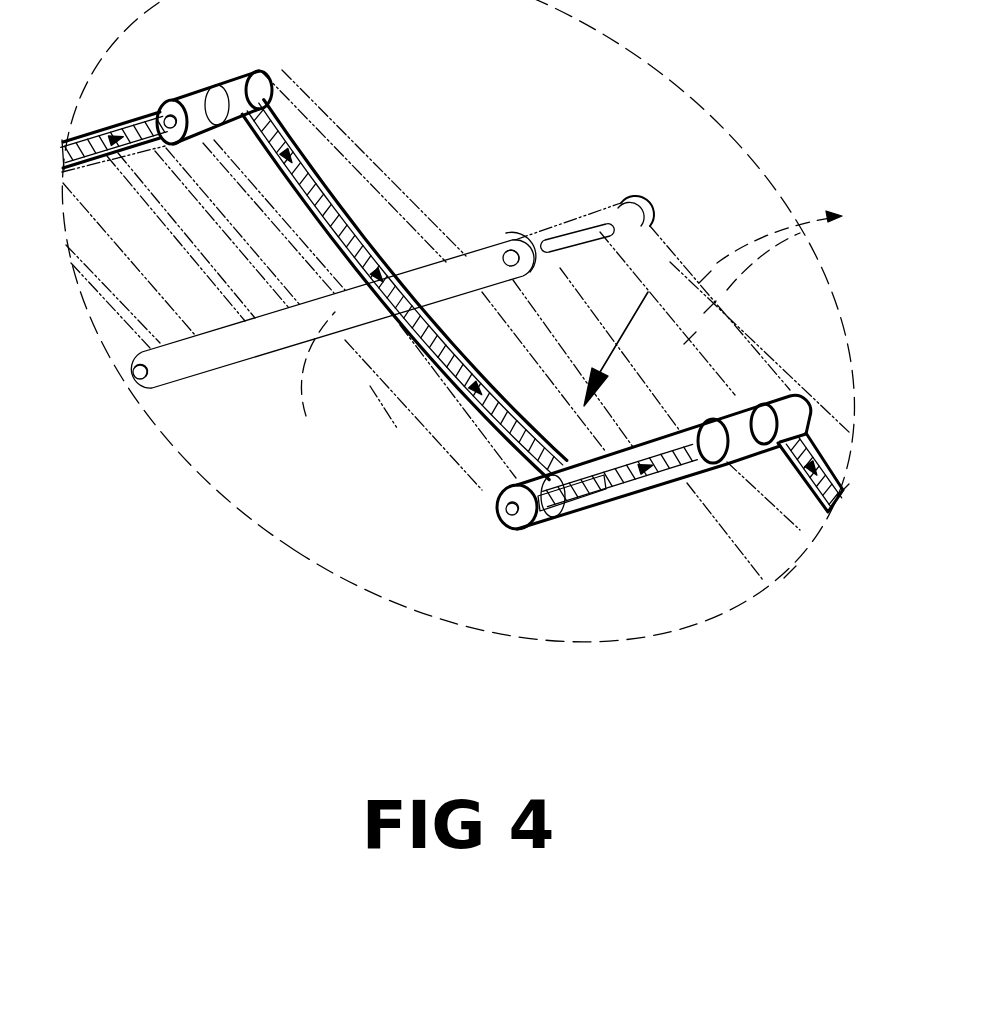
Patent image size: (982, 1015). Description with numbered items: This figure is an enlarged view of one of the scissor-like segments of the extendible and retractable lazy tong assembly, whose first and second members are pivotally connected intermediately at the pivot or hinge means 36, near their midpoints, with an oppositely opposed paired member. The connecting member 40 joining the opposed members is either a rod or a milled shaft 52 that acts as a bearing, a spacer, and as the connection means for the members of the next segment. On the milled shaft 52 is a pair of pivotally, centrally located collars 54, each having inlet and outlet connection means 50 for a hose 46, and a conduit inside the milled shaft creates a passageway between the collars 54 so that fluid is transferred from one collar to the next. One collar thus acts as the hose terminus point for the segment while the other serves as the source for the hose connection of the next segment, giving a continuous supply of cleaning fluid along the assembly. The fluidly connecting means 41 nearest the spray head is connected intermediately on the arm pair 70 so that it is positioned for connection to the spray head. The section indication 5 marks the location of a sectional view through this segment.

The section view direction 5 is at (624, 332).
The pivot or hinge means 36 is at (333, 338).
The connecting member 40 is at (487, 345).
The fluidly connecting means 41 is at (775, 422).
The internal hose 46 is at (343, 226).
The inlet and outlet connection means 50 is at (253, 97).
The milled shaft 52 is at (470, 293).
The collars 54 is at (194, 95).
The arm pair 70 is at (806, 238).